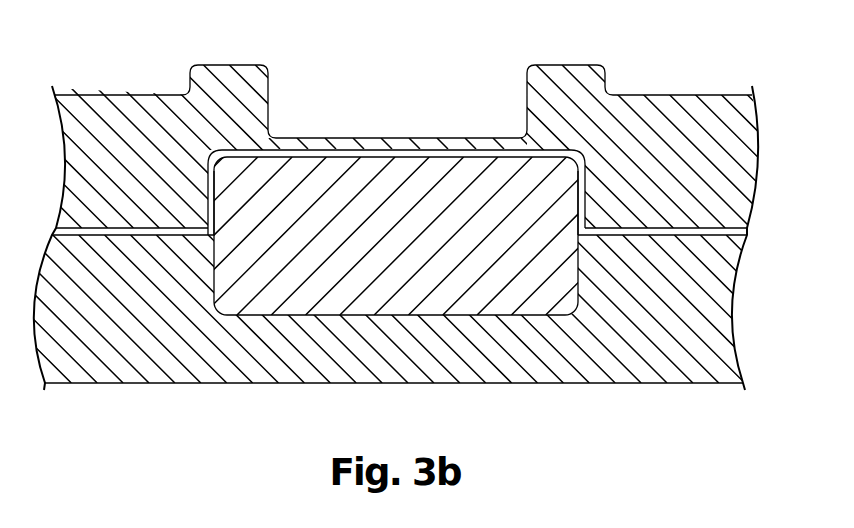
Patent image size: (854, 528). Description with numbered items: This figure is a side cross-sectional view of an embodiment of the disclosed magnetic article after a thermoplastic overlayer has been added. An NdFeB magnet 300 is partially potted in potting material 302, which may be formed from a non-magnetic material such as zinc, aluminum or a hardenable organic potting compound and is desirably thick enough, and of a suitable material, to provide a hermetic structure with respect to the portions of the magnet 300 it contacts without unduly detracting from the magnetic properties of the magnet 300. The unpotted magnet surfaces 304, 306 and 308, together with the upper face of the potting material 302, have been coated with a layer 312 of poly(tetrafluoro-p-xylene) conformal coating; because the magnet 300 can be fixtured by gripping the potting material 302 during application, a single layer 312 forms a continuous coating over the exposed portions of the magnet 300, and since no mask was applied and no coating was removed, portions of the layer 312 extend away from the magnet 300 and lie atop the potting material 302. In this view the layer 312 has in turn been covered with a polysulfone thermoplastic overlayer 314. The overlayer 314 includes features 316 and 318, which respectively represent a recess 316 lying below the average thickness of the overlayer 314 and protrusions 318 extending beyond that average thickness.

The NdFeB magnet 300 is at (567, 222).
The potting material 302 is at (124, 376).
The unpotted magnet surface 304 is at (217, 192).
The unpotted magnet surface 306 is at (409, 159).
The unpotted magnet surface 308 is at (582, 187).
The conformal coating layer 312 is at (229, 150).
The polysulfone thermoplastic overlayer 314 is at (122, 102).
The recess 316 is at (433, 92).
The protrusions 318 is at (243, 64).